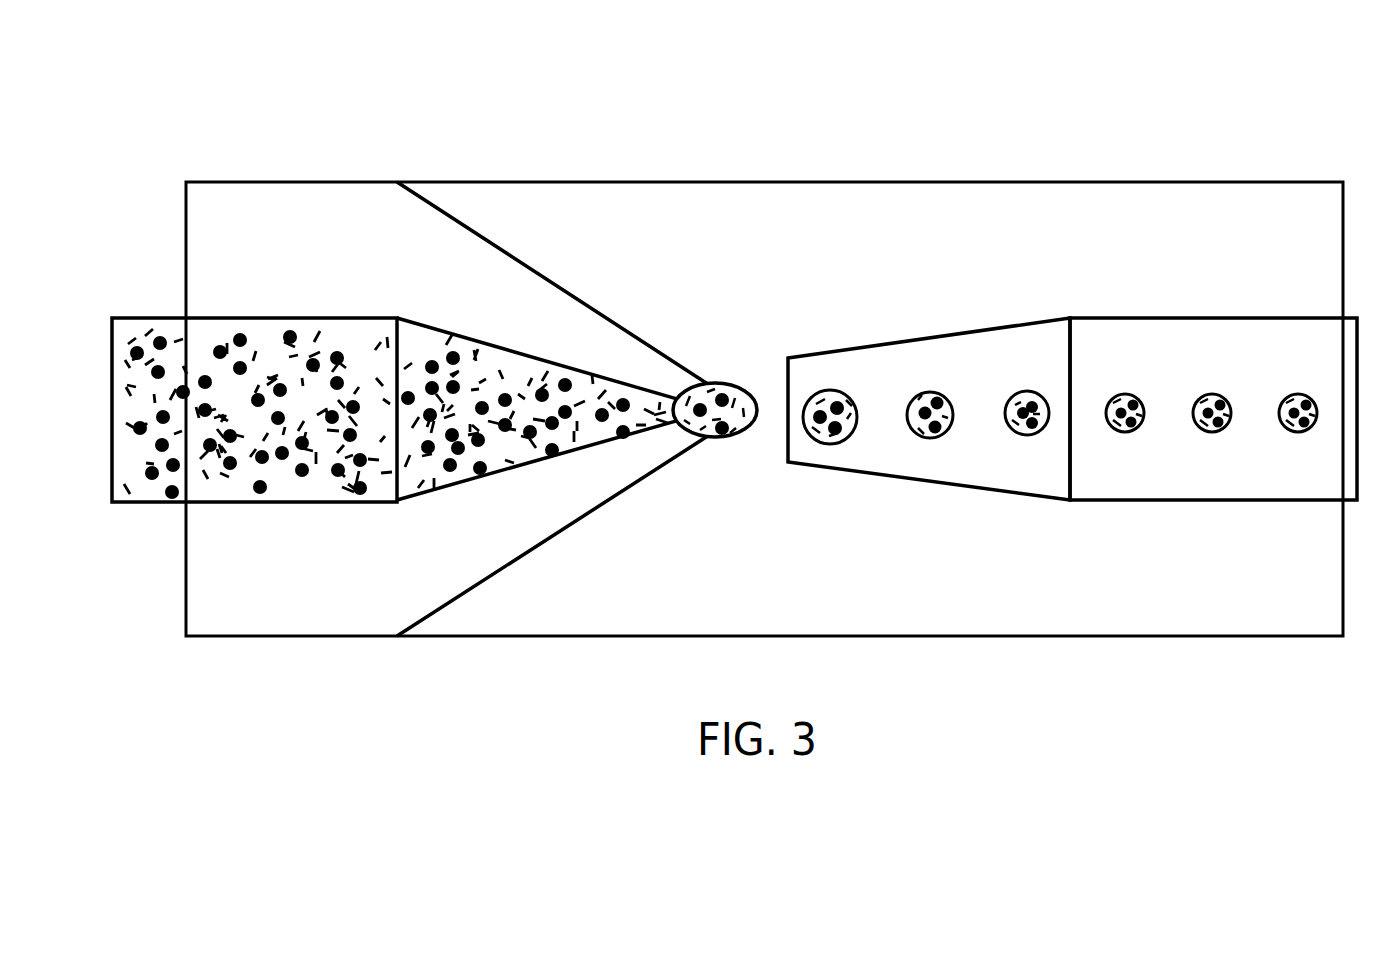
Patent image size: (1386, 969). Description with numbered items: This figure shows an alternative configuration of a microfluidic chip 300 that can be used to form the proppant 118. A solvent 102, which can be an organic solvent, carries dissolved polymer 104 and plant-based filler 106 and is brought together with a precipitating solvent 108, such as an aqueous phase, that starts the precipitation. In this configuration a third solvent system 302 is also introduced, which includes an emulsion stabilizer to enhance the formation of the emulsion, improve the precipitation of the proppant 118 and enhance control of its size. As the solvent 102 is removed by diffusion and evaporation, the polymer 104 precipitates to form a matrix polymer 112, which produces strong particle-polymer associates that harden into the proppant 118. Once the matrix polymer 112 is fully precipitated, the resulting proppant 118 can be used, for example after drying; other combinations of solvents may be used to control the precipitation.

The microfluidic chip 300 is at (1212, 86).
The third solvent system 302 is at (268, 198).
The precipitating solvent 108 is at (542, 198).
The solvent 102 is at (312, 333).
The plant-based filler 106 is at (243, 335).
The polymer 104 is at (413, 486).
The matrix polymer 112 is at (936, 391).
The proppant 118 is at (1212, 393).